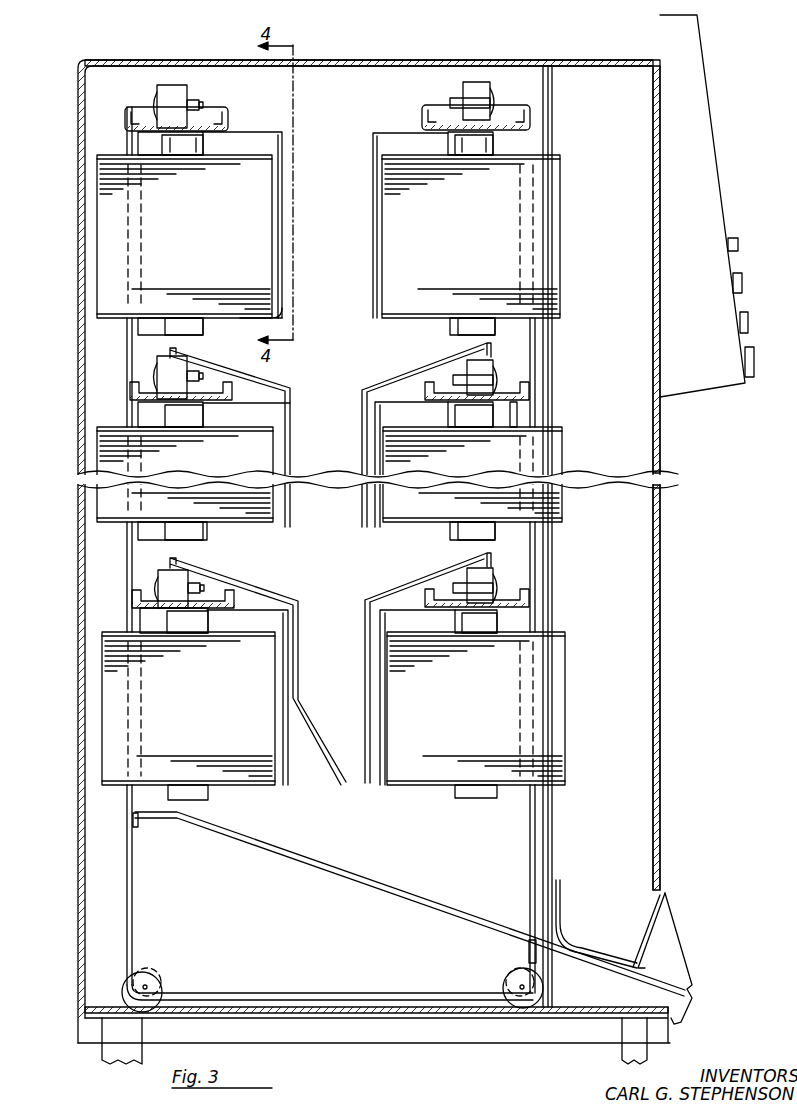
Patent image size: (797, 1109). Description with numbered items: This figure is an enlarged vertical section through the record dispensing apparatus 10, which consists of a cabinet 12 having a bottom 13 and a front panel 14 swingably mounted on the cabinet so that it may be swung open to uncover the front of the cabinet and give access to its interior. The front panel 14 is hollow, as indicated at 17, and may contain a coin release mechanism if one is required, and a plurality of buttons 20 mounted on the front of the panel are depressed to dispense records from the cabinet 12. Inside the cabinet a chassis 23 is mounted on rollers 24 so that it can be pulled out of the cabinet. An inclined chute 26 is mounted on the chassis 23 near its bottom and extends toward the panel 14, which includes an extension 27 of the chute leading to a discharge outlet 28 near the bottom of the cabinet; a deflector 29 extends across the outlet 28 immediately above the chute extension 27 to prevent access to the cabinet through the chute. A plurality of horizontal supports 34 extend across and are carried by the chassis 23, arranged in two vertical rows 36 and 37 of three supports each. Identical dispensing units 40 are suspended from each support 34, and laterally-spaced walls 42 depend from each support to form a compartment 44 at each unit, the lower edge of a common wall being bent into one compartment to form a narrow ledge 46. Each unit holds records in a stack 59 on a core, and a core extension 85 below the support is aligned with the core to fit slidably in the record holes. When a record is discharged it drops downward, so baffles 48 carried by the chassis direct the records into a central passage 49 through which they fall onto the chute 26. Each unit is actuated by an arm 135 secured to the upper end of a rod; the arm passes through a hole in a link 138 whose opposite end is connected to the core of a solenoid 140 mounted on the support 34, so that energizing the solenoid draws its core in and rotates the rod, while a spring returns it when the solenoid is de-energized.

The record dispensing apparatus 10 is at (665, 733).
The cabinet 12 is at (342, 60).
The bottom 13 is at (342, 1017).
The front panel 14 is at (662, 598).
The hollow of the panel 17 is at (640, 428).
The buttons 20 is at (742, 246).
The chassis 23 is at (128, 888).
The rollers 24 is at (120, 988).
The inclined chute 26 is at (430, 897).
The chute extension 27 is at (600, 963).
The discharge outlet 28 is at (660, 960).
The deflector 29 is at (658, 925).
The horizontal supports 34 is at (540, 135).
The vertical row 36 is at (513, 379).
The vertical row 37 is at (148, 584).
The dispensing units 40 is at (478, 104).
The laterally-spaced walls 42 is at (278, 140).
The compartment 44 is at (270, 152).
The narrow ledge 46 is at (283, 310).
The baffles 48 is at (370, 386).
The central passage 49 is at (393, 590).
The stack 59 is at (545, 300).
The core extension 85 is at (452, 325).
The arm 135 is at (458, 583).
The link 138 is at (455, 100).
The solenoid 140 is at (158, 97).